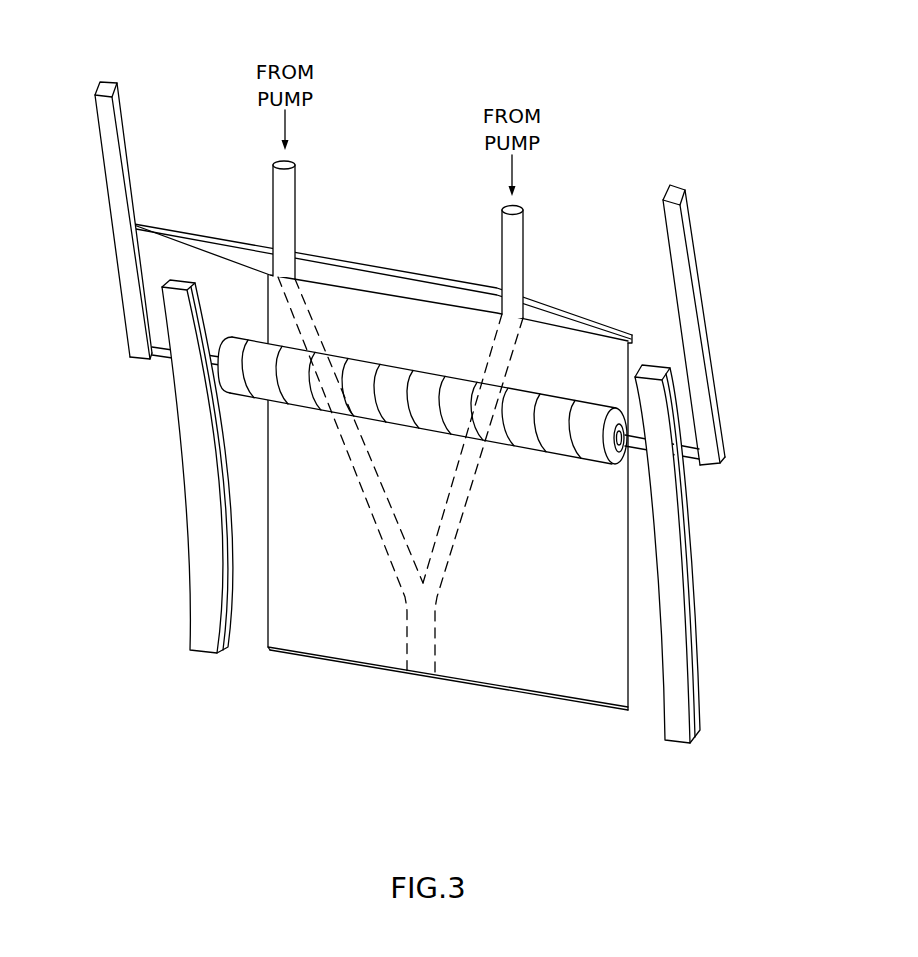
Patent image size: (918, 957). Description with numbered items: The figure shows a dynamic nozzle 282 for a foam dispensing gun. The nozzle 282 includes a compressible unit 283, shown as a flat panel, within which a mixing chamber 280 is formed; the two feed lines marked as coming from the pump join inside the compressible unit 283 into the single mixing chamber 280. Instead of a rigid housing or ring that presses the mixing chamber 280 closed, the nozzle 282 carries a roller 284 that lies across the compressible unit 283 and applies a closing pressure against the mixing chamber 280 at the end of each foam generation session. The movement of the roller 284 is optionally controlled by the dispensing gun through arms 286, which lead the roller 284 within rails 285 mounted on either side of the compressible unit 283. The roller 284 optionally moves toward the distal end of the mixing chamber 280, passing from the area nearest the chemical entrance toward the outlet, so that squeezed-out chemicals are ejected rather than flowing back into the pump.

The mixing chamber 280 is at (422, 650).
The dynamic nozzle 282 is at (556, 65).
The compressible unit 283 is at (344, 646).
The roller 284 is at (393, 390).
The rails 285 is at (193, 472).
The arms 286 is at (120, 133).